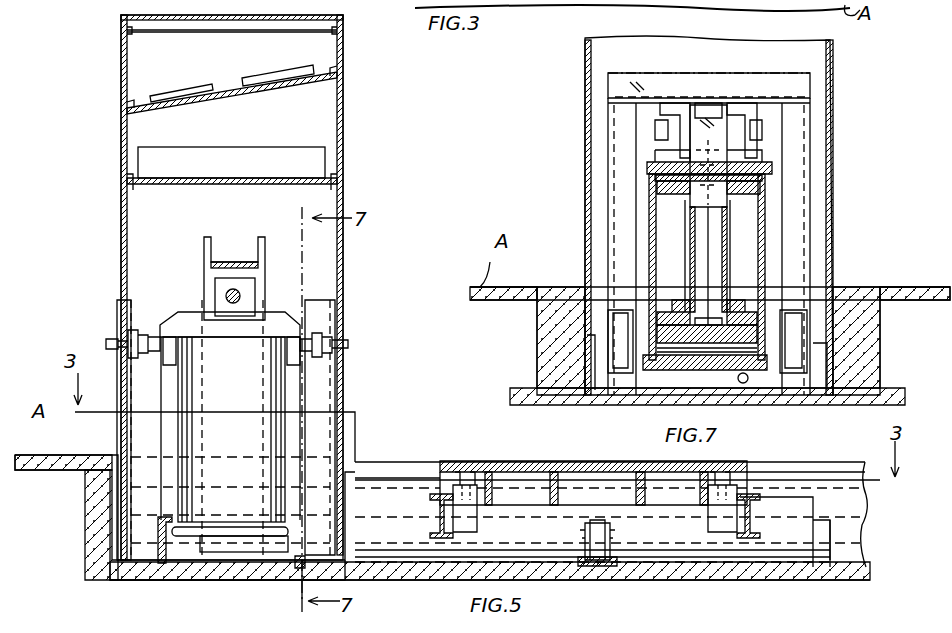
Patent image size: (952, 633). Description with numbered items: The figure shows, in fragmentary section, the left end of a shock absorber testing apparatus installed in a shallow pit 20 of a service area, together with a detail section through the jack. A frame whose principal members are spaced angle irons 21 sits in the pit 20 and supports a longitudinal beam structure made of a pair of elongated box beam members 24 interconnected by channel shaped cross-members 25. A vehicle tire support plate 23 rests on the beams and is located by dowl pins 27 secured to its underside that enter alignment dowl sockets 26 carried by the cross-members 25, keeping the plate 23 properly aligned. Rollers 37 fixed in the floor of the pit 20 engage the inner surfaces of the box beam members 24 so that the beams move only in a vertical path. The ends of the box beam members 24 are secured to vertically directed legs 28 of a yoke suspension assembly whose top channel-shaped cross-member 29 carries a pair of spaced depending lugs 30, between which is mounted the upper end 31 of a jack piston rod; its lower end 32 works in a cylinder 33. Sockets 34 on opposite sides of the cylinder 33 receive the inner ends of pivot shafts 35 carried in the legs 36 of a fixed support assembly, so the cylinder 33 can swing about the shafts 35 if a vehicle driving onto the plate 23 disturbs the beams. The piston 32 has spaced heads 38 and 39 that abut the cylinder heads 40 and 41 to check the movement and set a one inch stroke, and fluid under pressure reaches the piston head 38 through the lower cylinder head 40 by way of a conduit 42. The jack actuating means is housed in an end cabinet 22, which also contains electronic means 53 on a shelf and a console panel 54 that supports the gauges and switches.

In FIG. 5, the shallow pit 20 is at (110, 545).
In FIG. 7, the shallow pit 20 is at (540, 368).
In FIG. 5, the spaced angle irons 21 is at (866, 535).
In FIG. 5, the end cabinet 22 is at (345, 112).
In FIG. 7, the end cabinet 22 is at (585, 96).
In FIG. 5, the vehicle tire support plate 23 is at (540, 447).
In FIG. 5, the elongated box beam member 24 is at (825, 548).
In FIG. 7, the elongated box beam member 24 is at (812, 342).
In FIG. 5, the channel shaped cross-member 25 is at (790, 510).
In FIG. 5, the alignment dowl socket 26 is at (682, 538).
In FIG. 5, the dowl pin 27 is at (750, 475).
In FIG. 5, the vertically directed leg 28 is at (325, 395).
In FIG. 7, the vertically directed leg 28 is at (806, 180).
In FIG. 5, the top channel-shaped cross-member 29 is at (228, 262).
In FIG. 7, the top channel-shaped cross-member 29 is at (667, 73).
In FIG. 7, the depending lug 30 is at (740, 125).
In FIG. 7, the upper end of jack piston rod 31 is at (712, 103).
In FIG. 7, the lower end of jack piston rod 32 is at (690, 240).
In FIG. 5, the cylinder 33 is at (147, 14).
In FIG. 7, the cylinder 33 is at (660, 200).
In FIG. 5, the socket 34 is at (179, 360).
In FIG. 5, the pivot shaft 35 is at (340, 318).
In FIG. 5, the leg of fixed support assembly 36 is at (320, 425).
In FIG. 5, the roller 37 is at (598, 522).
In FIG. 7, the piston head 38 is at (752, 320).
In FIG. 7, the piston head 39 is at (752, 205).
In FIG. 7, the lower cylinder head 40 is at (663, 372).
In FIG. 7, the upper cylinder head 41 is at (740, 168).
In FIG. 7, the conduit 42 is at (748, 383).
In FIG. 5, the electronic means 53 is at (262, 150).
In FIG. 5, the console panel 54 is at (228, 60).